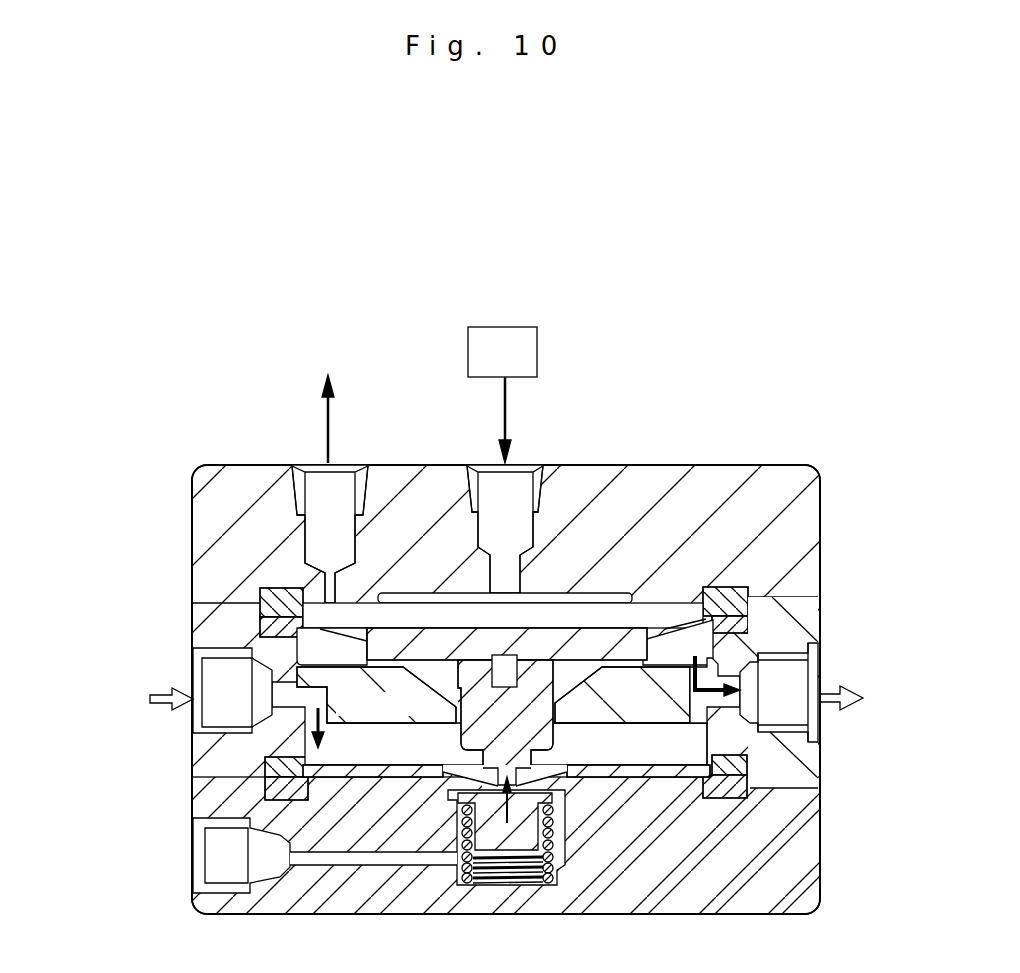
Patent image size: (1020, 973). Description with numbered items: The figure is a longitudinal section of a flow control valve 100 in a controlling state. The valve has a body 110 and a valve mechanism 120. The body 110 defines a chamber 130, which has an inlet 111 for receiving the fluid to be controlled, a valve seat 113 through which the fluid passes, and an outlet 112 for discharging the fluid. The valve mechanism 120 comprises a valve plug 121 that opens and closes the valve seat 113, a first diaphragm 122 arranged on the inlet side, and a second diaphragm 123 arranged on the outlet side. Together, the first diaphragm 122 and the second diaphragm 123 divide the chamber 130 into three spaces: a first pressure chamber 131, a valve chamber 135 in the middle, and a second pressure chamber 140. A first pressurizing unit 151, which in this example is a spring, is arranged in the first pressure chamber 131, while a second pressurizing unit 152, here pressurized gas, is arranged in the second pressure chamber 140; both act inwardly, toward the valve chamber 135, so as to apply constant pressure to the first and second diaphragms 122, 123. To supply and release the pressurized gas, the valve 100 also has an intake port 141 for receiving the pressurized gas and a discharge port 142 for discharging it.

The flow control valve 100 is at (551, 585).
The body 110 is at (740, 463).
The inlet 111 is at (300, 694).
The outlet 112 is at (733, 686).
The valve seat 113 is at (455, 707).
The valve mechanism 120 is at (585, 625).
The valve plug 121 is at (453, 720).
The first diaphragm 122 is at (327, 762).
The second diaphragm 123 is at (378, 632).
The chamber 130 is at (389, 679).
The first pressure chamber 131 is at (450, 860).
The valve chamber 135 is at (700, 740).
The second pressure chamber 140 is at (475, 614).
The intake port 141 is at (513, 503).
The discharge port 142 is at (316, 500).
The first pressurizing unit 151 is at (528, 883).
The second pressurizing unit 152 is at (523, 356).